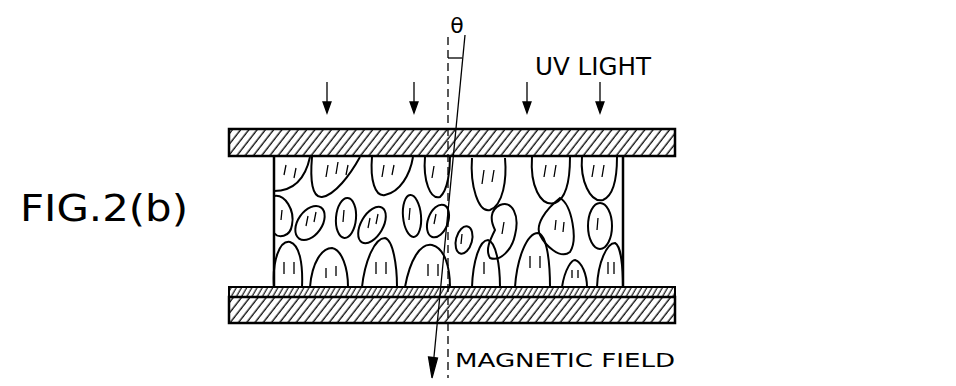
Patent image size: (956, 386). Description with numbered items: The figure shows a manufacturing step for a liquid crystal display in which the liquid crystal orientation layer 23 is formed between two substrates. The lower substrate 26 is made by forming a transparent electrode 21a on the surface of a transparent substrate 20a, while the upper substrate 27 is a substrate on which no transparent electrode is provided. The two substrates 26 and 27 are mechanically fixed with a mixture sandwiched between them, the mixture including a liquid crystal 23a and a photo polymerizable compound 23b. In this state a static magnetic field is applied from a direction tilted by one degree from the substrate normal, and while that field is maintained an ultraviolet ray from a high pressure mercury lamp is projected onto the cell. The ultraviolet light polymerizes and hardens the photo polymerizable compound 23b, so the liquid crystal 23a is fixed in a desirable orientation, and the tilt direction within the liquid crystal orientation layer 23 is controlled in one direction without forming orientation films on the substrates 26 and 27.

The substrate 27 is at (670, 144).
The liquid crystal orientation layer 23 is at (549, 221).
The liquid crystal 23a is at (600, 200).
The photo polymerizable compound 23b is at (603, 216).
The substrate 26 is at (537, 303).
The transparent electrode 21a is at (675, 292).
The transparent substrate 20a is at (675, 321).